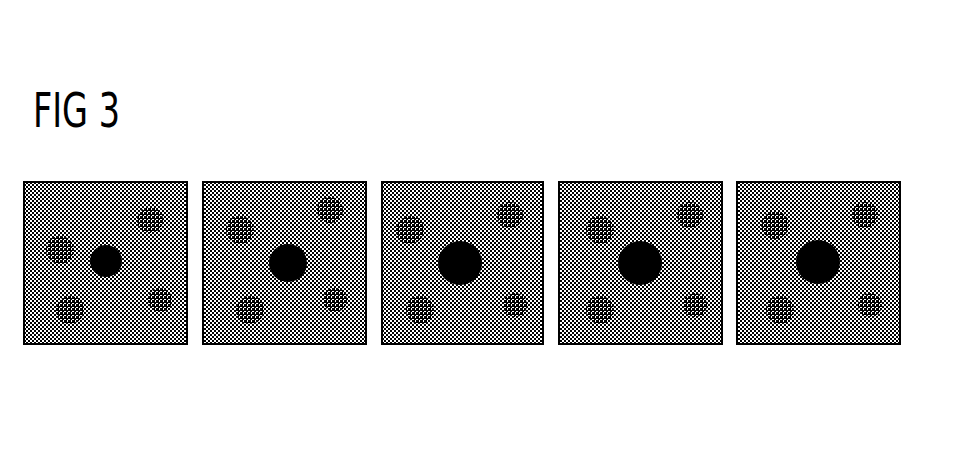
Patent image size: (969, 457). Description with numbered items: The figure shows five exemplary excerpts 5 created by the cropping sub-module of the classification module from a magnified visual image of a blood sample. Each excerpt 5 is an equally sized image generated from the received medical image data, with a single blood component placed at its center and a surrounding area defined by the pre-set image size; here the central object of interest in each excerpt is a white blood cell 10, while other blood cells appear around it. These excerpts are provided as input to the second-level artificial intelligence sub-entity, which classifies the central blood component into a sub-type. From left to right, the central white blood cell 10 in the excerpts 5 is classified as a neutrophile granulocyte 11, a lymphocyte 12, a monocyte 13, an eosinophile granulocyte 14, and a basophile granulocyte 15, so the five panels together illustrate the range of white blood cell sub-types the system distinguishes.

The excerpt 5 is at (40, 344).
The white blood cell 10 is at (458, 331).
The neutrophile granulocyte 11 is at (106, 277).
The lymphocyte 12 is at (288, 282).
The monocyte 13 is at (460, 285).
The eosinophile granulocyte 14 is at (640, 285).
The basophile granulocyte 15 is at (818, 284).